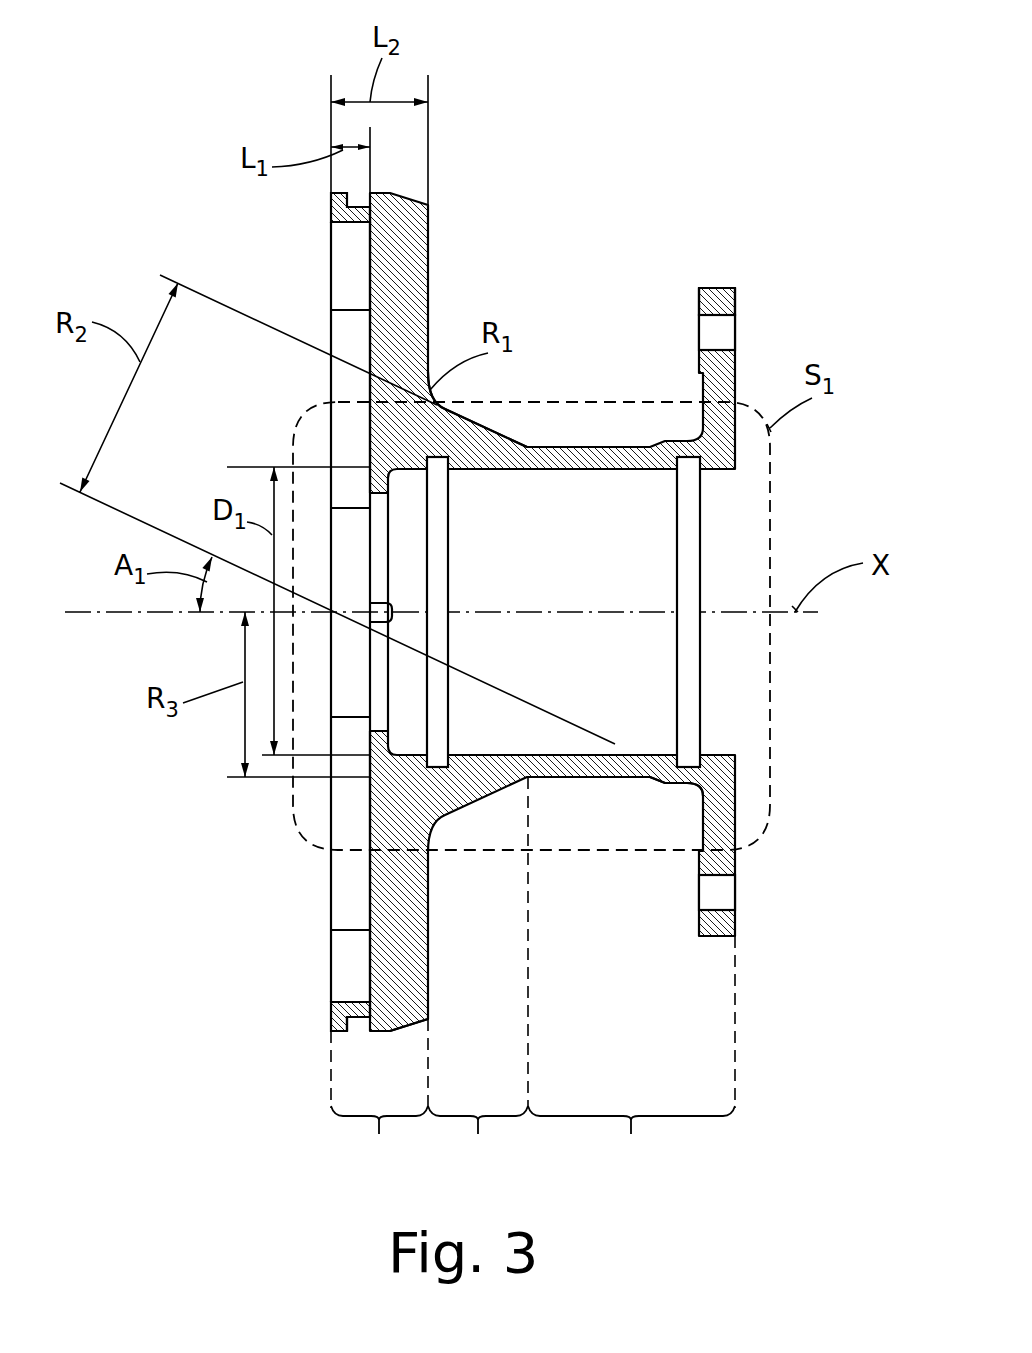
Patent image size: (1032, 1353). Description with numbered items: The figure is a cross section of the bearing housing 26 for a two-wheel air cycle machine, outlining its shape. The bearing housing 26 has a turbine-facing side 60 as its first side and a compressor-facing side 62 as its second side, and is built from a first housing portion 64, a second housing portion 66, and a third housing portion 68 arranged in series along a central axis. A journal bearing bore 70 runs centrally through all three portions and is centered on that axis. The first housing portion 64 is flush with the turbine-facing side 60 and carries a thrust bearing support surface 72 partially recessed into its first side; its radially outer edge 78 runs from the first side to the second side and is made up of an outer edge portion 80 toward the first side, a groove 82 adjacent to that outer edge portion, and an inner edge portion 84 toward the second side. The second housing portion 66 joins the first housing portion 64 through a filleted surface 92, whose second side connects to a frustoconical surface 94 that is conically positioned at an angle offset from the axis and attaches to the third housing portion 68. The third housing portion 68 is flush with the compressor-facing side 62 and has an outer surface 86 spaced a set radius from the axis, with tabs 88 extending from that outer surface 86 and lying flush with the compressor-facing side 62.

The bearing housing 26 is at (714, 149).
The turbine-facing side 60 is at (331, 204).
The compressor-facing side 62 is at (737, 372).
The first housing portion 64 is at (379, 1091).
The second housing portion 66 is at (478, 970).
The third housing portion 68 is at (631, 1050).
The journal bearing bore 70 is at (737, 755).
The thrust bearing support surface 72 is at (370, 330).
The edge 78 is at (370, 1048).
The outer edge portion 80 is at (333, 1028).
The groove 82 is at (353, 1005).
The inner edge portion 84 is at (410, 1025).
The outer surface 86 is at (615, 778).
The tabs 88 is at (718, 288).
The filleted surface 92 is at (433, 398).
The frustoconical surface 94 is at (505, 435).